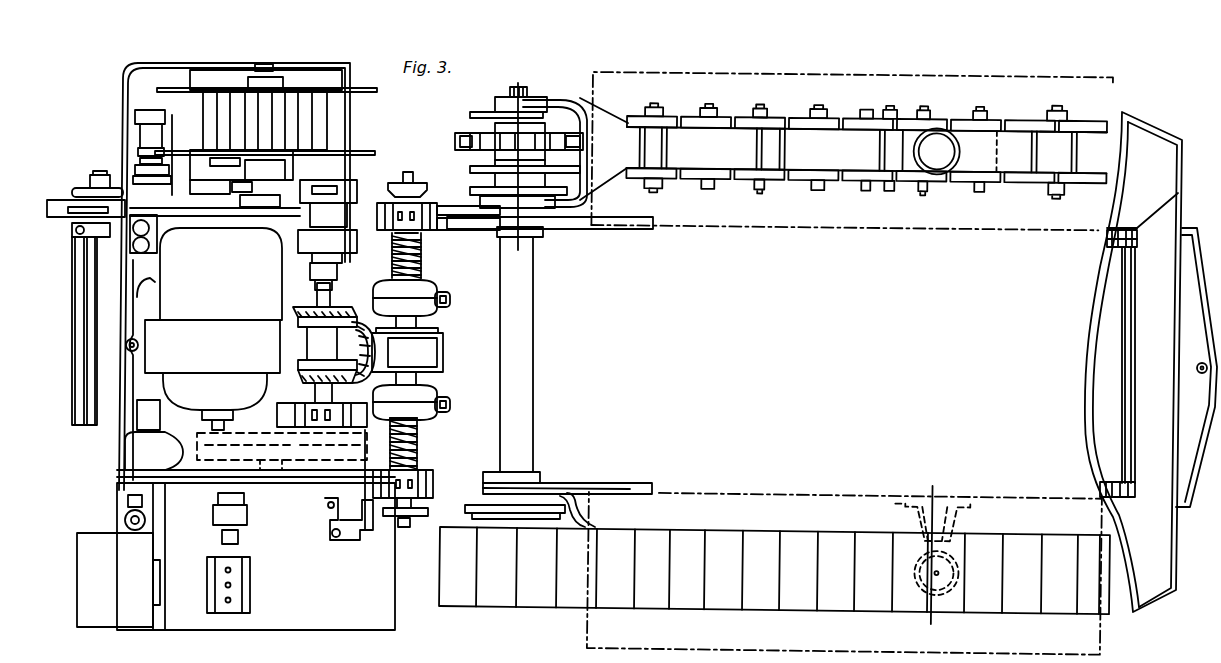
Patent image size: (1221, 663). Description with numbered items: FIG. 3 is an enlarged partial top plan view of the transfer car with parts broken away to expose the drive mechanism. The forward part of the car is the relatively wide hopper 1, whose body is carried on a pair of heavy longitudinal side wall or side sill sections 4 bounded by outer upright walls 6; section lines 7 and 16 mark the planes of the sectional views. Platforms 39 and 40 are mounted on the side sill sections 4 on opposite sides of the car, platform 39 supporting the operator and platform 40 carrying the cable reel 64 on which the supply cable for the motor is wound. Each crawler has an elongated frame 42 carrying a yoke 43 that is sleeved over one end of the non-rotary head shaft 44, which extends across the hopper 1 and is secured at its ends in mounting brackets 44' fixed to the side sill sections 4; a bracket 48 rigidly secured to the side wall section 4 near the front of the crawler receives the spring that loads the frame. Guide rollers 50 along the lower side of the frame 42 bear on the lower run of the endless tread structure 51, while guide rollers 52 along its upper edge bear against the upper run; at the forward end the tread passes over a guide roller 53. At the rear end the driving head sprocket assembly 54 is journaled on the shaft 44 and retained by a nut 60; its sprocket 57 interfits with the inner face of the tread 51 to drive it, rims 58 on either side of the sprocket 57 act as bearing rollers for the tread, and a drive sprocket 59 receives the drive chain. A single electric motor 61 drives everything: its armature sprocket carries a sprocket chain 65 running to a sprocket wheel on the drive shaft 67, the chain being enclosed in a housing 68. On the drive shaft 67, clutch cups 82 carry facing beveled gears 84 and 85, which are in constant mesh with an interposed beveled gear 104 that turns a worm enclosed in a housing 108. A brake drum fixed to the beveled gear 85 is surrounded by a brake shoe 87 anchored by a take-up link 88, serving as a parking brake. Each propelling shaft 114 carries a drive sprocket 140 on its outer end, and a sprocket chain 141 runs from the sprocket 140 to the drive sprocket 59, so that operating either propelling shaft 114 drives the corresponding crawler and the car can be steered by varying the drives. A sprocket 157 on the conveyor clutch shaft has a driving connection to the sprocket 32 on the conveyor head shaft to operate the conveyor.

The hopper section 1 is at (1150, 150).
The side wall sections 4 is at (838, 225).
The outer upright walls 6 is at (630, 72).
The section line 7 is at (940, 478).
The shaft 16 is at (525, 81).
The sprocket 32 is at (78, 190).
The platform 39 is at (295, 630).
The platform 40 is at (345, 85).
The crawler frame 42 is at (740, 120).
The yoke 43 is at (555, 107).
The head shaft 44 is at (533, 349).
The mounting brackets 44' is at (567, 474).
The bracket 48 is at (955, 543).
The guide rollers 50 is at (810, 115).
The endless tread structure 51 is at (545, 590).
The guide rollers 52 is at (760, 150).
The guide roller 53 is at (1098, 114).
The driving head sprocket assembly 54 is at (460, 133).
The sprocket 57 is at (470, 148).
The rims 58 is at (477, 110).
The drive sprocket 59 is at (562, 215).
The nut 60 is at (527, 92).
The electric motor 61 is at (158, 309).
The cable reel 64 is at (172, 90).
The sprocket chain 65 is at (262, 470).
The drive shaft 67 is at (213, 329).
The housing 68 is at (296, 478).
The clutch cup 82 is at (322, 403).
The beveled gear 84 is at (312, 384).
The beveled gear 85 is at (310, 273).
The brake shoe 87 is at (432, 296).
The take-up link 88 is at (448, 308).
The beveled gear 104 is at (400, 360).
The housing 108 is at (441, 350).
The propelling shaft 114 is at (430, 330).
The drive sprocket 140 is at (395, 182).
The sprocket chain 141 is at (455, 215).
The sprocket 157 is at (348, 152).